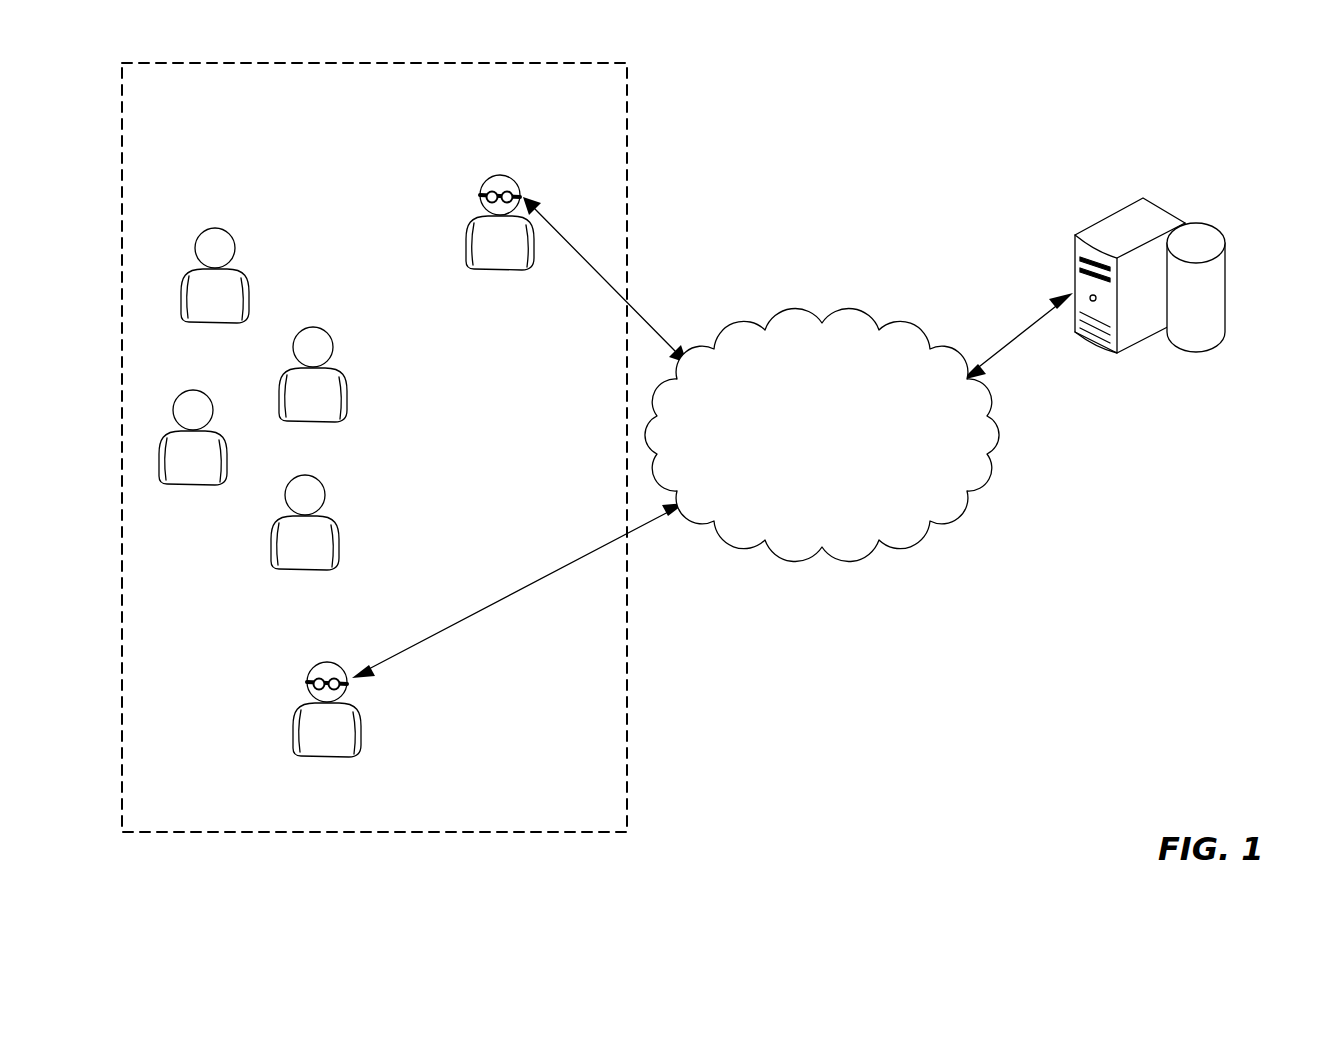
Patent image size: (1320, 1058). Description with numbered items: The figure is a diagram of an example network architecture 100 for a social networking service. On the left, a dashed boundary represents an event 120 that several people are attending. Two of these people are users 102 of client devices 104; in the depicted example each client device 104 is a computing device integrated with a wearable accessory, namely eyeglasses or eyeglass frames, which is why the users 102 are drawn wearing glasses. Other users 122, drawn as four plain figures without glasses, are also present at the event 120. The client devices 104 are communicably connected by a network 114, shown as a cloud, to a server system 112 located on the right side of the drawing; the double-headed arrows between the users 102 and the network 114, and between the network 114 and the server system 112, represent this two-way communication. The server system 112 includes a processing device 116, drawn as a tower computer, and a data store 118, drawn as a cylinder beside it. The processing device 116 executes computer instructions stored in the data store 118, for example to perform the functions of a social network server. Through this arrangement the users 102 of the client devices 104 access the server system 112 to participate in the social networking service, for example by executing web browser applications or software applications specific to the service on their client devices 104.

The network architecture 100 is at (940, 175).
The user 102 is at (495, 272).
The client device 104 is at (512, 182).
The server system 112 is at (1164, 297).
The network 114 is at (840, 322).
The processing device 116 is at (1163, 212).
The data store 118 is at (1226, 285).
The event 120 is at (628, 706).
The other users 122 is at (245, 271).